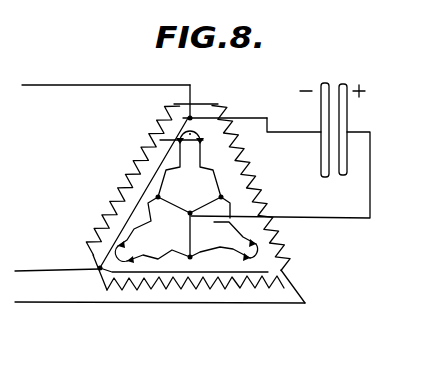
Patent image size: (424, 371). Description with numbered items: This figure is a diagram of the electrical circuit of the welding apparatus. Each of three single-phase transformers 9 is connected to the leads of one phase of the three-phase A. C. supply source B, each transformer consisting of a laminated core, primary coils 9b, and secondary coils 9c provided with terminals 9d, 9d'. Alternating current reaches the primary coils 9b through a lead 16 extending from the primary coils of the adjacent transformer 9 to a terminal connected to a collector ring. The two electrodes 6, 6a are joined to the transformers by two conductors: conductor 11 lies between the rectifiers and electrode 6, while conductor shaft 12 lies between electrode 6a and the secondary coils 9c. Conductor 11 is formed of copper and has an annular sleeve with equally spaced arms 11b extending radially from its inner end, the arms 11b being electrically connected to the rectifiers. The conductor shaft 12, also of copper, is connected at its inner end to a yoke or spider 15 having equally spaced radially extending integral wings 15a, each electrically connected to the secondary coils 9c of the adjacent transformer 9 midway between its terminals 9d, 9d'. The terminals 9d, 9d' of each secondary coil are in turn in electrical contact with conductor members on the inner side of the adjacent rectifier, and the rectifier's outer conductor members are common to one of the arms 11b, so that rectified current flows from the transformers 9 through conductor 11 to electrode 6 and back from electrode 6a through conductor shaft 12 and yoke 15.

The electrode 6 is at (322, 83).
The electrode 6a is at (343, 84).
The transformer 9 is at (109, 206).
The primary coils 9b is at (144, 158).
The secondary coils 9c is at (170, 183).
The terminal 9d is at (186, 181).
The terminal 9d' is at (163, 127).
The conductor 11 is at (297, 121).
The arms 11b is at (196, 108).
The conductor shaft 12 is at (335, 220).
The yoke or spider 15 is at (192, 216).
The wings or arms 15a is at (188, 238).
The lead 16 is at (69, 86).
The A. C. supply source B is at (42, 265).